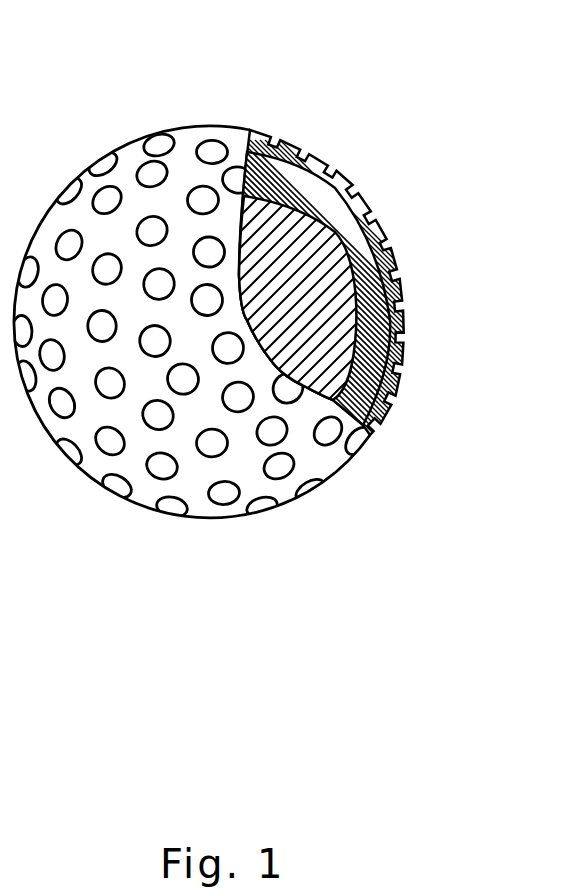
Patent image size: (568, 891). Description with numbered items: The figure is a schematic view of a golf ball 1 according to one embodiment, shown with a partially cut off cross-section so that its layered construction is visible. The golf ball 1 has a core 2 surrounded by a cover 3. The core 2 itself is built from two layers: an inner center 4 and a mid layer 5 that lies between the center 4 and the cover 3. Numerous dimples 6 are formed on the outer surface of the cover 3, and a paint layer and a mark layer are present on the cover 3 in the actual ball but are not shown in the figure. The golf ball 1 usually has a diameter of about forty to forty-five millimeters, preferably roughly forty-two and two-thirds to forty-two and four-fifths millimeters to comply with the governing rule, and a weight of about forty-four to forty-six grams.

The golf ball 1 is at (470, 57).
The core 2 is at (284, 290).
The cover 3 is at (373, 213).
The center 4 is at (316, 316).
The mid layer 5 is at (393, 253).
The dimples 6 is at (108, 200).